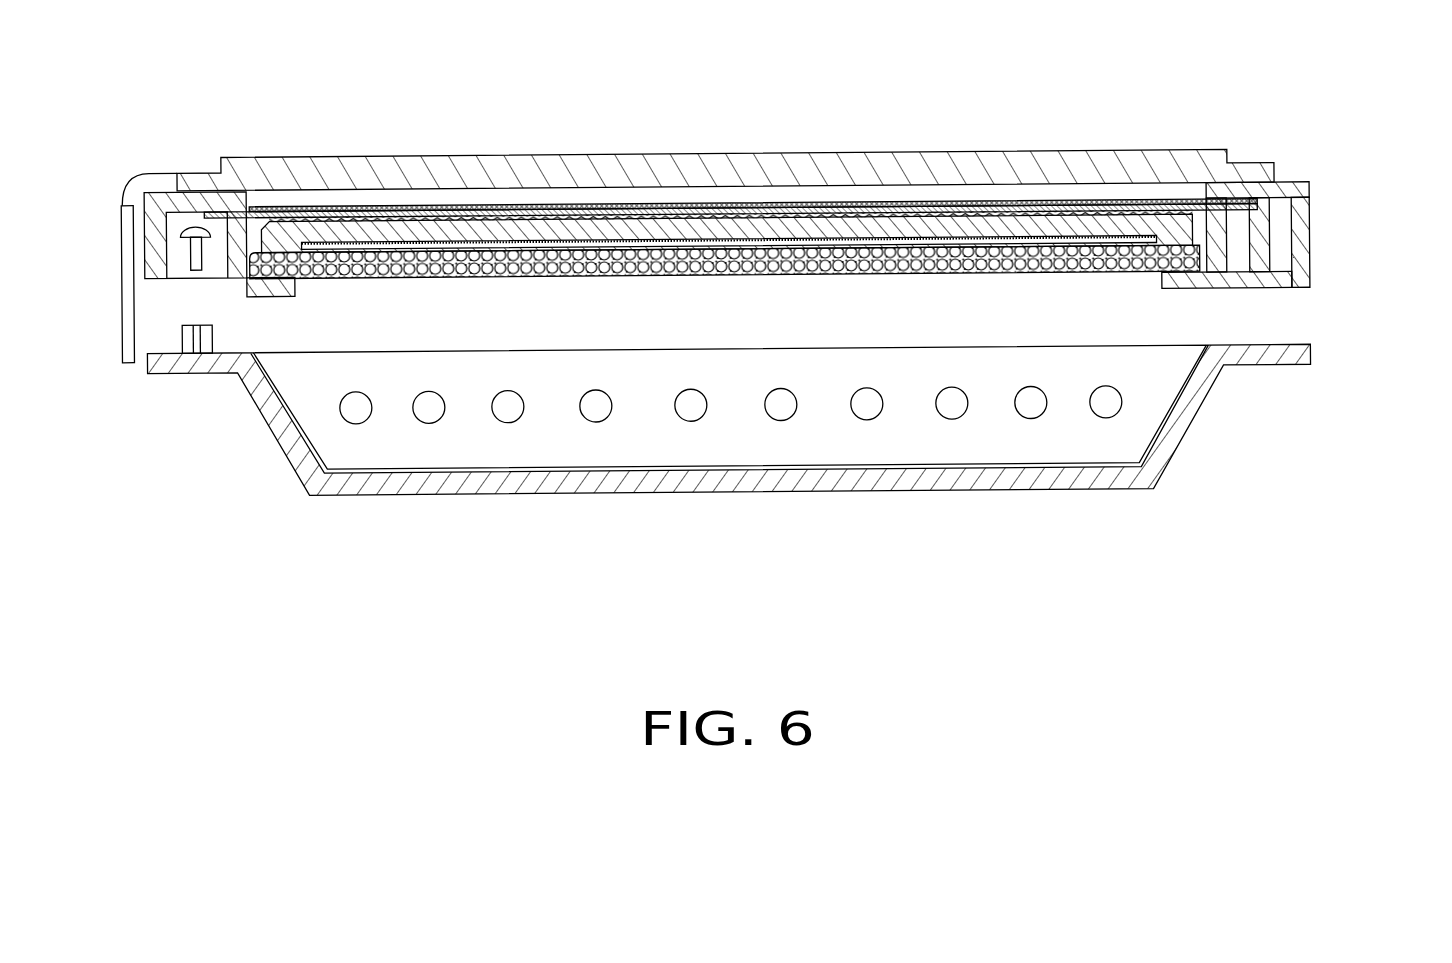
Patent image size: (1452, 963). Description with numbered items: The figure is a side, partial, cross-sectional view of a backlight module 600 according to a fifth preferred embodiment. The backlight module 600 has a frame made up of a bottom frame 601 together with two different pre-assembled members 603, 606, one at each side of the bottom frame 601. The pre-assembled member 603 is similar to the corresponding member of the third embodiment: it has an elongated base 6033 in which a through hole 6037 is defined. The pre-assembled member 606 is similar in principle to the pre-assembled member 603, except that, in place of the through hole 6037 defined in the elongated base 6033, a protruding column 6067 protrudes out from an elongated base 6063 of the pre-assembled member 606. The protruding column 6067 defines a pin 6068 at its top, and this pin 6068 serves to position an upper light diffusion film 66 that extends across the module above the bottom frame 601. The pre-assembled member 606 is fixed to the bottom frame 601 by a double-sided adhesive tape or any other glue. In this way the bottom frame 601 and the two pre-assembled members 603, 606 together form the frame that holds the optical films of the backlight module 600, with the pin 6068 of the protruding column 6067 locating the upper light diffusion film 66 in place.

The backlight module 600 is at (755, 68).
The upper light diffusion film 66 is at (913, 206).
The pin 6068 is at (1253, 204).
The protruding column 6067 is at (1263, 247).
The elongated base 6063 is at (1263, 281).
The pre-assembled member 606 is at (1435, 450).
The through hole 6037 is at (198, 283).
The elongated base 6033 is at (225, 286).
The pre-assembled member 603 is at (255, 428).
The bottom frame 601 is at (771, 493).